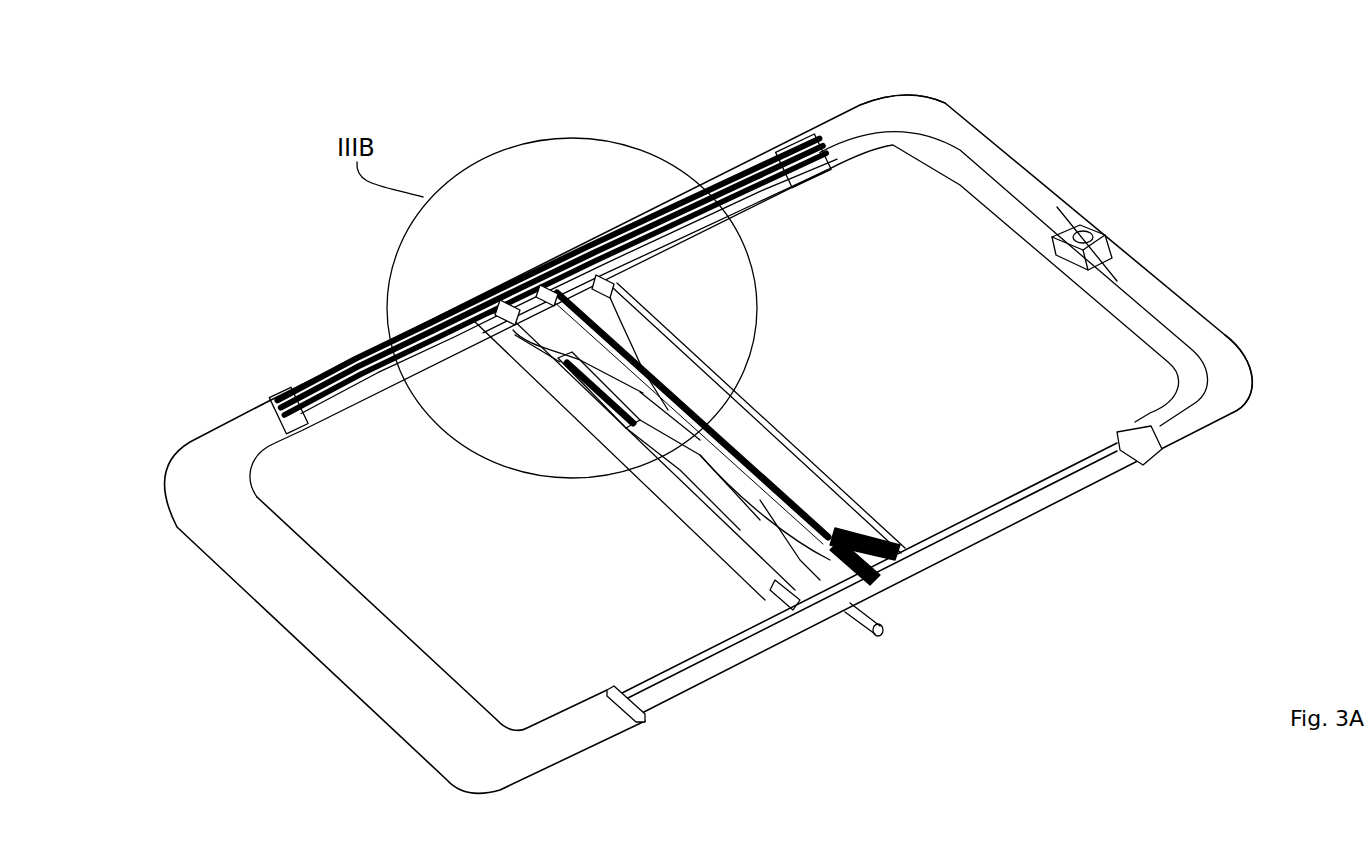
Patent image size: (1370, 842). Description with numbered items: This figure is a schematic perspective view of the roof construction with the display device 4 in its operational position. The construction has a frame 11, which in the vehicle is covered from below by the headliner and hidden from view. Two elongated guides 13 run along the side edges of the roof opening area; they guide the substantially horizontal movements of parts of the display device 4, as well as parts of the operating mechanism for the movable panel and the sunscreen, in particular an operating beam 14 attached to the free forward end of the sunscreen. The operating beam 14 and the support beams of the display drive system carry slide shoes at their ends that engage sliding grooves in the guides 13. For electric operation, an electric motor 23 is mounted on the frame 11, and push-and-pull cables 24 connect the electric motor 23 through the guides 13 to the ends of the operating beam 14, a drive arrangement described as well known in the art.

The frame 11 is at (166, 474).
The guides 13 is at (760, 157).
The operating beam 14 is at (793, 607).
The electric motor 23 is at (1112, 244).
The push-and-pull cables 24 is at (870, 130).
The display device 4 is at (887, 553).